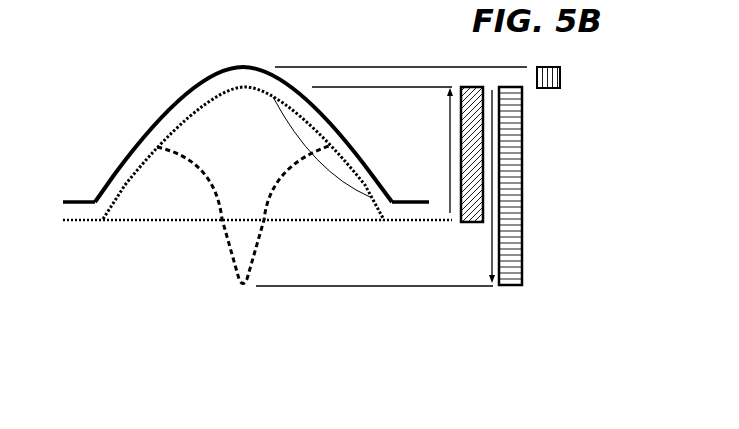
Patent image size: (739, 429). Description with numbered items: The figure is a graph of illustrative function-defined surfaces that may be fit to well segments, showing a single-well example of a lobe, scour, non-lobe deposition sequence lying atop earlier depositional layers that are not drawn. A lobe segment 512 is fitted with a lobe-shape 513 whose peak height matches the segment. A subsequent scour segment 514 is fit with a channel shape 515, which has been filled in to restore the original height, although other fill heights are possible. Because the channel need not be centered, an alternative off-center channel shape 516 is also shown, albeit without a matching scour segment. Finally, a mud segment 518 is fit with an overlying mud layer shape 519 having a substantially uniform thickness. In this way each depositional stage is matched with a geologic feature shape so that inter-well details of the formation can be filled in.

The lobe segment 512 is at (432, 152).
The lobe-shape 513 is at (217, 92).
The scour segment 514 is at (475, 184).
The channel shape 515 is at (237, 278).
The off-center channel shape 516 is at (330, 172).
The mud segment 518 is at (570, 73).
The mud layer shape 519 is at (232, 67).